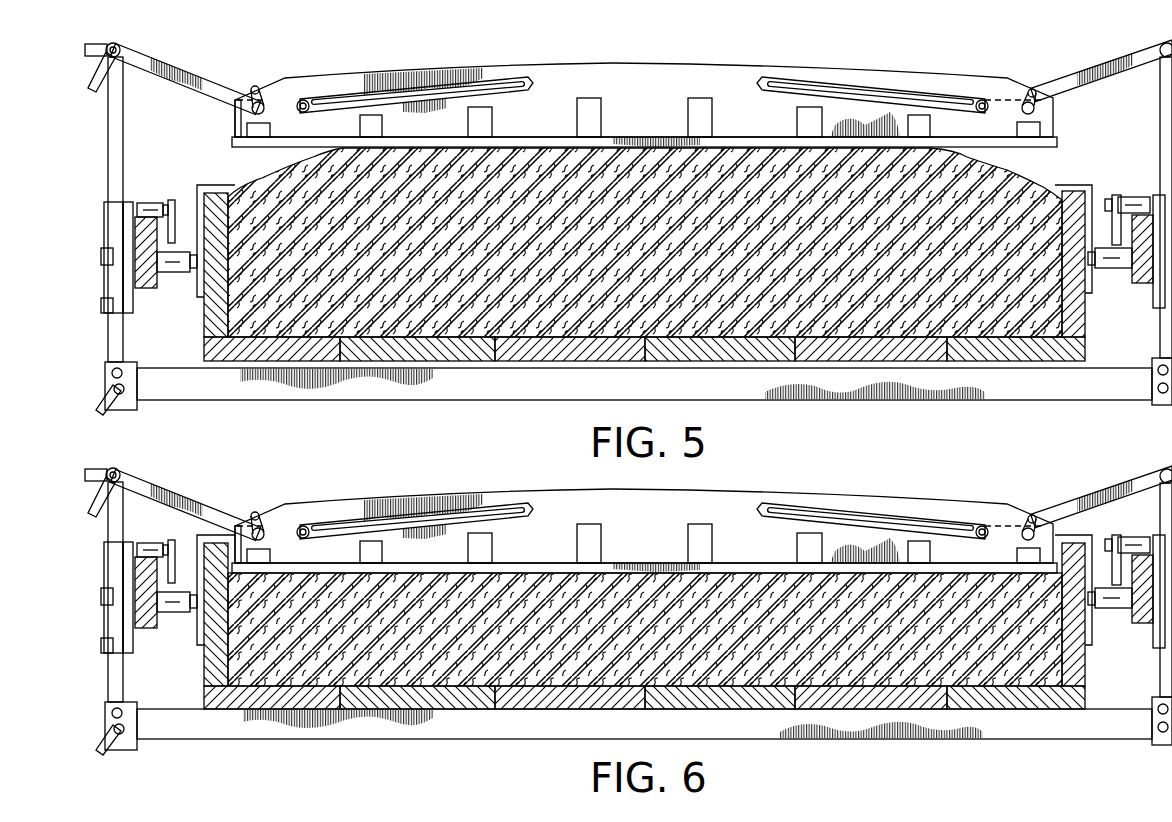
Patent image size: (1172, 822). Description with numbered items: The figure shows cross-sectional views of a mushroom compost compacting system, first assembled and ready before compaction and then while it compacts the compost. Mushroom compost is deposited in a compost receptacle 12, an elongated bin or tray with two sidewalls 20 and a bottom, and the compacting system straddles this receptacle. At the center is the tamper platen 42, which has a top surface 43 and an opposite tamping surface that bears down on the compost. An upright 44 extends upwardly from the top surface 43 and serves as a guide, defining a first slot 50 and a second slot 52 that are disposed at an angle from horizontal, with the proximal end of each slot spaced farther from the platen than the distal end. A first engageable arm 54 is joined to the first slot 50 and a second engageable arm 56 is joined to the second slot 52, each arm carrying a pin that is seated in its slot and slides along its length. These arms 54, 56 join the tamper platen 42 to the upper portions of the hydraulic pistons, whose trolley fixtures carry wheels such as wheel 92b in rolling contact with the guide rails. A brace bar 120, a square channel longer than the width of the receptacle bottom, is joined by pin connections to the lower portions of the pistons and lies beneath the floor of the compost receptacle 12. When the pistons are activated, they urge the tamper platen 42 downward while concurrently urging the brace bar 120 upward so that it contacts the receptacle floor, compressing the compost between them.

In FIG. 5, the compost receptacle 12 is at (1040, 325).
In FIG. 5, the sidewall 20 is at (1070, 200).
In FIG. 5, the tamper platen 42 is at (997, 157).
In FIG. 5, the top surface 43 is at (727, 137).
In FIG. 5, the upright 44 is at (638, 85).
In FIG. 6, the upright 44 is at (553, 507).
In FIG. 5, the first slot 50 is at (353, 102).
In FIG. 6, the first slot 50 is at (352, 530).
In FIG. 5, the second slot 52 is at (835, 92).
In FIG. 6, the second slot 52 is at (838, 517).
In FIG. 5, the first engageable arm 54 is at (215, 87).
In FIG. 6, the first engageable arm 54 is at (220, 513).
In FIG. 5, the second engageable arm 56 is at (1068, 82).
In FIG. 6, the second engageable arm 56 is at (1070, 510).
In FIG. 5, the wheel 92b is at (155, 197).
In FIG. 6, the wheel 92b is at (150, 540).
In FIG. 5, the brace bar 120 is at (462, 388).
In FIG. 6, the brace bar 120 is at (434, 728).